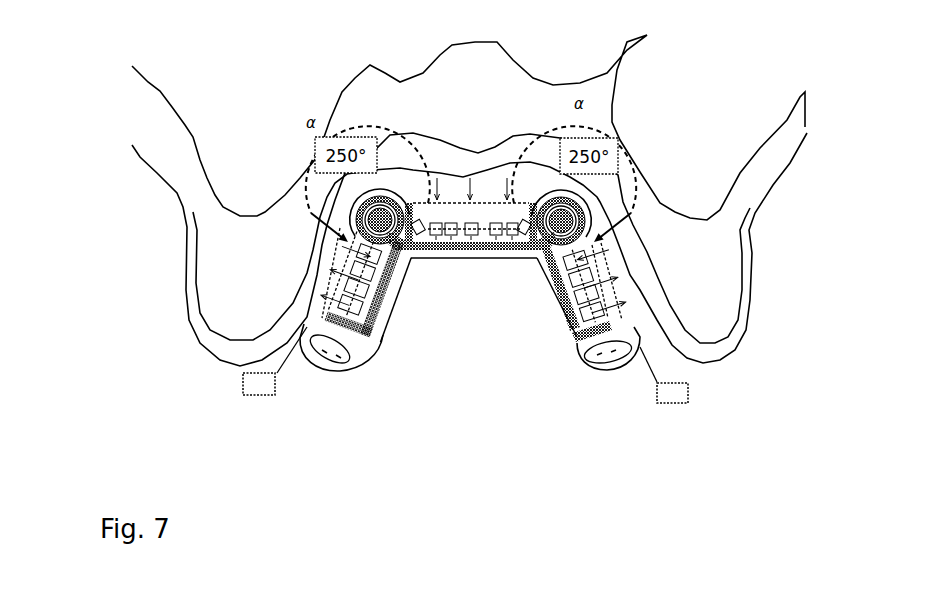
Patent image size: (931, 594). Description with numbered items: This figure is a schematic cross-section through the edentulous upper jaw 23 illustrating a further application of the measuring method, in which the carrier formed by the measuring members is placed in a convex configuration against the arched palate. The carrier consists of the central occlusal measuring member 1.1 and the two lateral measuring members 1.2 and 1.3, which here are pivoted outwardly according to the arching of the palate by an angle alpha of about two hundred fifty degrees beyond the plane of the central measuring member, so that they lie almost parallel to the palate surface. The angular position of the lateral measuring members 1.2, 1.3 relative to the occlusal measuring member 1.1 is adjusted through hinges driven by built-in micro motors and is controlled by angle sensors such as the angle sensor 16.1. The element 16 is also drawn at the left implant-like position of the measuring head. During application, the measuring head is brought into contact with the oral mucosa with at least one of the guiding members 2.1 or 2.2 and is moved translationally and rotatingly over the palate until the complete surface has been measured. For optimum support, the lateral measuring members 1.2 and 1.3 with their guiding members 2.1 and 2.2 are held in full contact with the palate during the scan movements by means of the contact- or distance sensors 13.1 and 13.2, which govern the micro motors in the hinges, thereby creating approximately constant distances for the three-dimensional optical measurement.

The edentulous upper jaw 23 is at (175, 110).
The implant 16 is at (385, 190).
The angle sensor 16.1 is at (558, 200).
The occlusal measuring member 1.1 is at (483, 203).
The lateral measuring member 1.2 is at (378, 340).
The lateral measuring member 1.3 is at (565, 333).
The guiding member 2.1 is at (326, 367).
The guiding member 2.2 is at (612, 371).
The contact- or distance sensor 13.1 is at (243, 384).
The contact- or distance sensor 13.2 is at (688, 392).